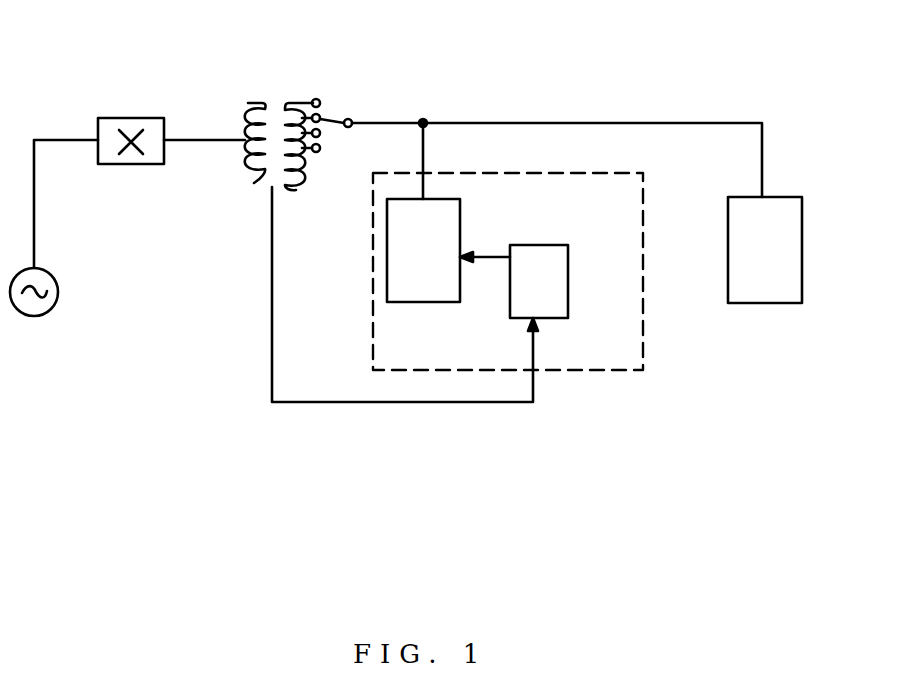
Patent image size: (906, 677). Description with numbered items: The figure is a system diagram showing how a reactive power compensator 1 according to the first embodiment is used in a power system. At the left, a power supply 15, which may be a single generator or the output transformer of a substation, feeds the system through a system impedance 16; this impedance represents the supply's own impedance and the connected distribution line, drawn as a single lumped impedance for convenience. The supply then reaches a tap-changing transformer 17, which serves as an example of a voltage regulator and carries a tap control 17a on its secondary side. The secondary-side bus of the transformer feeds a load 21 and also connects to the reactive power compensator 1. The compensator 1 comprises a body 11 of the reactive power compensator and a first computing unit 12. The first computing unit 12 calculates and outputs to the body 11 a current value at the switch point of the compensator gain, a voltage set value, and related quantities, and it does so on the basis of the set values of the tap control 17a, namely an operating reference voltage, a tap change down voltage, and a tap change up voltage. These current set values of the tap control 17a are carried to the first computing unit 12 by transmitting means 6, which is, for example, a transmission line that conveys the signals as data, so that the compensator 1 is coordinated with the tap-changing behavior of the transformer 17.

The reactive power compensator 1 is at (643, 348).
The transmitting means 6 is at (347, 402).
The body of the reactive power compensator 11 is at (400, 302).
The first computing unit 12 is at (560, 318).
The power supply 15 is at (56, 300).
The system impedance 16 is at (122, 118).
The tap-changing transformer 17 is at (254, 183).
The tap control 17a is at (338, 121).
The load 21 is at (802, 268).